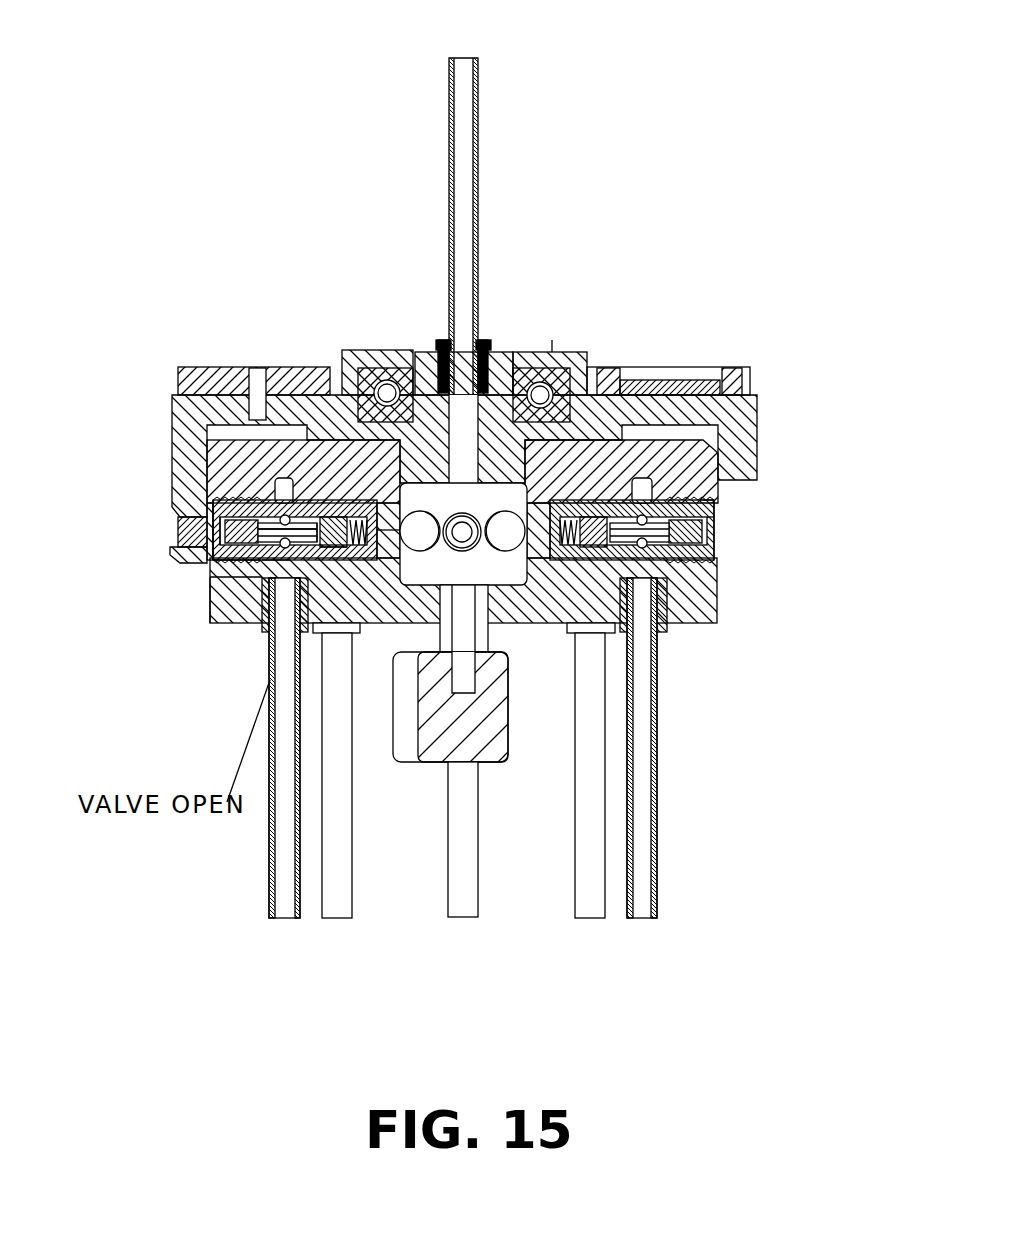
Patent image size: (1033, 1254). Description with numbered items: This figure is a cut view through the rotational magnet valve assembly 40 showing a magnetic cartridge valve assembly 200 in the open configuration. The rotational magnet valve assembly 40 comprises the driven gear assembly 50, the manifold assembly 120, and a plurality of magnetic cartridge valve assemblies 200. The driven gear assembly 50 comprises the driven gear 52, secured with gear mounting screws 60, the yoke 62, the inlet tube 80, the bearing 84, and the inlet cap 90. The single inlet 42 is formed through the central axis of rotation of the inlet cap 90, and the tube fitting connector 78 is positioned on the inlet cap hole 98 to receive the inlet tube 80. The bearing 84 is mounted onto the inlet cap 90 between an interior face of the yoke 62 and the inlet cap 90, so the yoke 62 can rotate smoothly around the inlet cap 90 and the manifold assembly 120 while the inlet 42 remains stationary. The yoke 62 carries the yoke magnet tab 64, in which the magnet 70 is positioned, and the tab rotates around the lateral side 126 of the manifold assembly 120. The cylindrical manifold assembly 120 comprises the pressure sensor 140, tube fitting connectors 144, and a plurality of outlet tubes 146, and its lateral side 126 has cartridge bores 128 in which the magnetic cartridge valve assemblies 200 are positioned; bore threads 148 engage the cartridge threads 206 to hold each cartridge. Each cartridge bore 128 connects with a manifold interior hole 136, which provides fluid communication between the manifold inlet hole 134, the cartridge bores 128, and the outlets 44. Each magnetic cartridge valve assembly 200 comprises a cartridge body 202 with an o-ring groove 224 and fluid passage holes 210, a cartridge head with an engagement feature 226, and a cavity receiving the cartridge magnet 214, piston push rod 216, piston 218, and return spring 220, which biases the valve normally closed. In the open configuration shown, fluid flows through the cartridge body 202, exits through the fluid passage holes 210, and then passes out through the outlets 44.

The rotational magnet valve assembly 40 is at (202, 93).
The inlet 42 is at (437, 352).
The outlets 44 is at (270, 580).
The driven gear assembly 50 is at (295, 318).
The driven gear 52 is at (753, 380).
The gear mounting screws 60 is at (252, 365).
The yoke 62 is at (757, 440).
The yoke magnet tab 64 is at (180, 510).
The magnet 70 is at (180, 530).
The tube fitting connector 78 is at (485, 342).
The inlet tube 80 is at (478, 193).
The bearing 84 is at (587, 352).
The inlet cap 90 is at (625, 380).
The inlet cap hole 98 is at (413, 352).
The manifold assembly 120 is at (723, 617).
The lateral side 126 is at (210, 583).
The cartridge bores 128 is at (258, 590).
The manifold inlet hole 134 is at (507, 583).
The manifold interior holes 136 is at (552, 352).
The pressure sensor 140 is at (492, 763).
The tube fitting connectors 144 is at (680, 643).
The outlet tubes 146 is at (657, 832).
The bore threads 148 is at (715, 490).
The magnetic cartridge valve assemblies 200 is at (160, 552).
The cartridge body 202 is at (350, 512).
The cartridge threads 206 is at (715, 503).
The fluid passage holes 210 is at (252, 500).
The cartridge magnet 214 is at (245, 565).
The piston push rod 216 is at (275, 555).
The piston 218 is at (325, 548).
The return spring 220 is at (313, 560).
The o-ring groove 224 is at (393, 537).
The engagement feature 226 is at (230, 507).